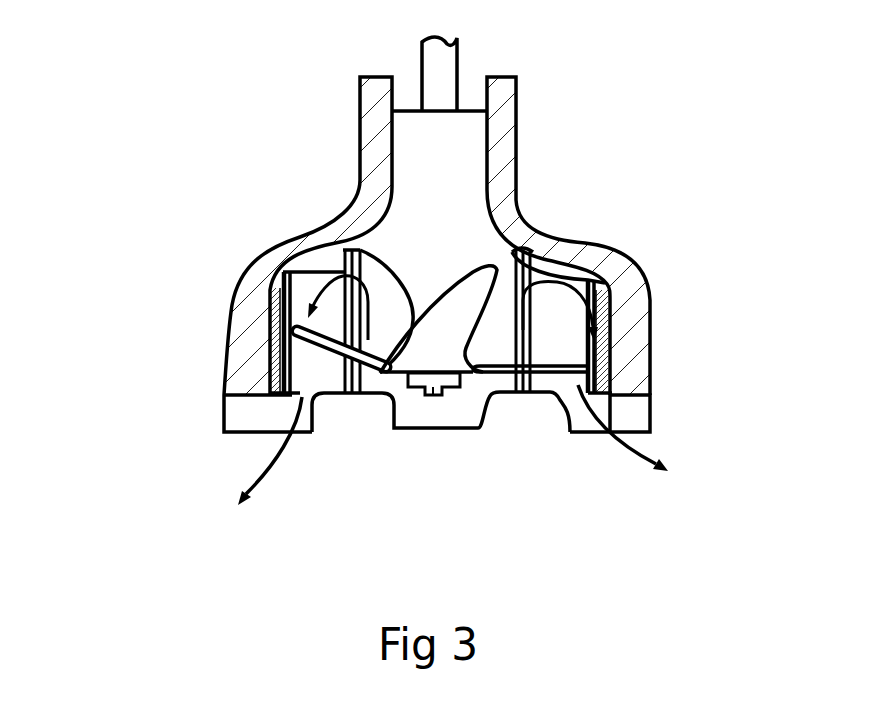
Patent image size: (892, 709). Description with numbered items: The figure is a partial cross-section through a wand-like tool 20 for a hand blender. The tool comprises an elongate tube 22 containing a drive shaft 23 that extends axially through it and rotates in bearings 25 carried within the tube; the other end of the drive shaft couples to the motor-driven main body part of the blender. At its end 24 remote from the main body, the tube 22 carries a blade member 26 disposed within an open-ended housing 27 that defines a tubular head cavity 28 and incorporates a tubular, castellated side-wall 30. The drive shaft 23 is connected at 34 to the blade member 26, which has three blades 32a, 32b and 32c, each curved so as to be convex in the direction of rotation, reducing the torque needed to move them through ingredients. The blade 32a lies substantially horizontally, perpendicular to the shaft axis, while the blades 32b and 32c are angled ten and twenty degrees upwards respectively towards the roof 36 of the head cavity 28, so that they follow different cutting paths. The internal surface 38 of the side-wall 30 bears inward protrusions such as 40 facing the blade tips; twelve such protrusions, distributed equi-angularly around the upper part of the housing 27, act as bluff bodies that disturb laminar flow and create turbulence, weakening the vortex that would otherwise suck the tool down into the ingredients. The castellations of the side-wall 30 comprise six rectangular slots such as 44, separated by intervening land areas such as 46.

The wand-like tool 20 is at (212, 164).
The elongate tube 22 is at (517, 120).
The drive shaft 23 is at (445, 58).
The end of the tube 24 is at (345, 216).
The bearings 25 is at (455, 203).
The blade member 26 is at (502, 394).
The open-ended housing 27 is at (673, 320).
The head cavity 28 is at (192, 248).
The castellated side-wall 30 is at (652, 393).
The blade 32a is at (544, 385).
The blade 32b is at (277, 420).
The blade 32c is at (438, 319).
The connection of drive shaft to blade member 34 is at (420, 393).
The roof of the head cavity 36 is at (620, 283).
The internal surface of the side-wall 38 is at (300, 418).
The inward protrusion 40 is at (334, 400).
The slot 44 is at (369, 420).
The land area 46 is at (430, 430).